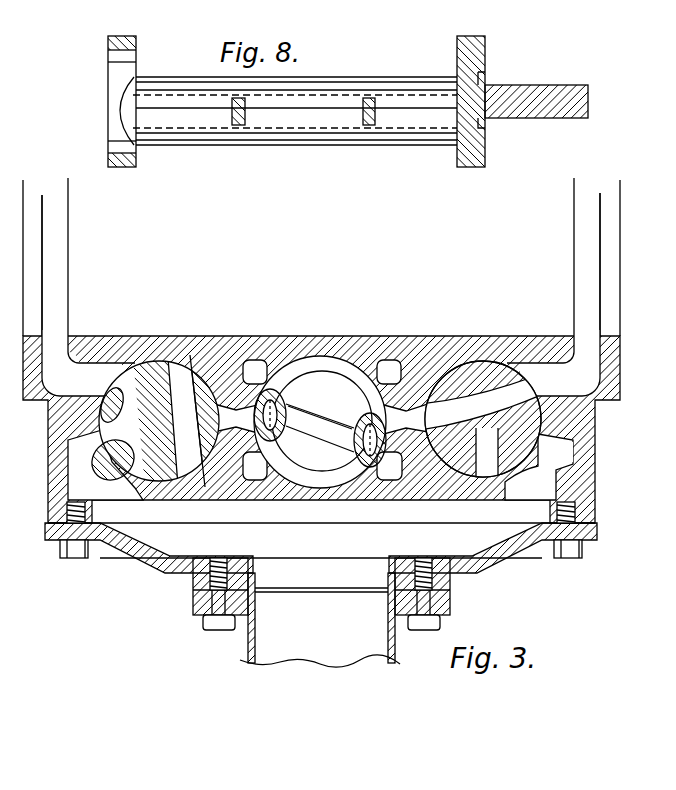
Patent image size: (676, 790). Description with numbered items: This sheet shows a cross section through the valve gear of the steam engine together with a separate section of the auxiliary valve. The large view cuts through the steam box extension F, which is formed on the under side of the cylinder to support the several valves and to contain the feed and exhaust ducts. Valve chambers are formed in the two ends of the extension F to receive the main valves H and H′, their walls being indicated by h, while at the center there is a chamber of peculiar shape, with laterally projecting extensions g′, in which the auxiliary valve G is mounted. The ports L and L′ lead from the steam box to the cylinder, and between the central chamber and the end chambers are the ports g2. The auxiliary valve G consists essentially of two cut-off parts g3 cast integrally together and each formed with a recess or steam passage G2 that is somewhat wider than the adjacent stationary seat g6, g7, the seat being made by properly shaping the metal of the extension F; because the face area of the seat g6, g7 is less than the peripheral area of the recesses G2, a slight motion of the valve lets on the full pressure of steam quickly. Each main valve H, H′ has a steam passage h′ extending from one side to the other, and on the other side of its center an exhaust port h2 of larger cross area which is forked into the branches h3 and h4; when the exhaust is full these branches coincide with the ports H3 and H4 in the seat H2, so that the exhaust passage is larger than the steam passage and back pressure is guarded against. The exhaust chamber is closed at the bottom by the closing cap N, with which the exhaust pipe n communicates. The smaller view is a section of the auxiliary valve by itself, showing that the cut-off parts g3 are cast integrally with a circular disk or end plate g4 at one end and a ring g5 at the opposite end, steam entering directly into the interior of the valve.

In FIG. 8, the ring g5 is at (128, 38).
In FIG. 8, the circular disk or end plate g4 is at (485, 48).
In FIG. 8, the seat g7 is at (295, 111).
In FIG. 3, the seat g7 is at (386, 392).
In FIG. 3, the exhaust port h2 is at (640, 431).
In FIG. 3, the steam box extension F is at (50, 483).
In FIG. 3, the port to the cylinder L′ is at (55, 363).
In FIG. 3, the port to the cylinder L is at (590, 353).
In FIG. 3, the walls of the end chamber h is at (175, 500).
In FIG. 3, the seat H2 is at (545, 470).
In FIG. 3, the exhaust port H4 is at (542, 463).
In FIG. 3, the laterally projecting extensions g′ is at (258, 497).
In FIG. 3, the ports g2 is at (410, 482).
In FIG. 3, the seat g6 is at (386, 480).
In FIG. 3, the auxiliary valve G is at (316, 362).
In FIG. 3, the recess or steam passage G2 is at (366, 497).
In FIG. 3, the cut-off parts g3 is at (356, 452).
In FIG. 3, the main valve H′ is at (150, 372).
In FIG. 3, the passage way or port h′ is at (510, 365).
In FIG. 3, the branch port h3 is at (435, 497).
In FIG. 3, the branch port h4 is at (485, 474).
In FIG. 3, the main valve H is at (478, 370).
In FIG. 3, the exhaust port H3 is at (512, 490).
In FIG. 3, the closing cap N is at (172, 560).
In FIG. 3, the exhaust pipe n is at (265, 645).